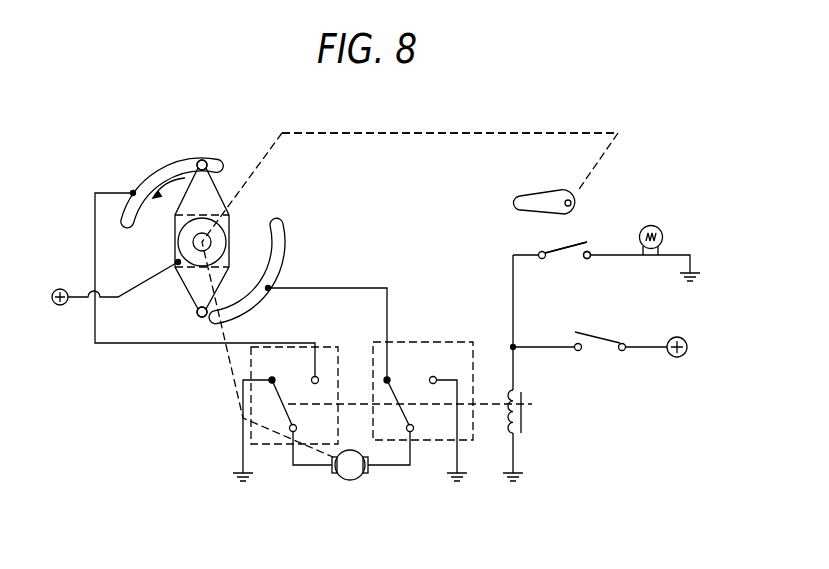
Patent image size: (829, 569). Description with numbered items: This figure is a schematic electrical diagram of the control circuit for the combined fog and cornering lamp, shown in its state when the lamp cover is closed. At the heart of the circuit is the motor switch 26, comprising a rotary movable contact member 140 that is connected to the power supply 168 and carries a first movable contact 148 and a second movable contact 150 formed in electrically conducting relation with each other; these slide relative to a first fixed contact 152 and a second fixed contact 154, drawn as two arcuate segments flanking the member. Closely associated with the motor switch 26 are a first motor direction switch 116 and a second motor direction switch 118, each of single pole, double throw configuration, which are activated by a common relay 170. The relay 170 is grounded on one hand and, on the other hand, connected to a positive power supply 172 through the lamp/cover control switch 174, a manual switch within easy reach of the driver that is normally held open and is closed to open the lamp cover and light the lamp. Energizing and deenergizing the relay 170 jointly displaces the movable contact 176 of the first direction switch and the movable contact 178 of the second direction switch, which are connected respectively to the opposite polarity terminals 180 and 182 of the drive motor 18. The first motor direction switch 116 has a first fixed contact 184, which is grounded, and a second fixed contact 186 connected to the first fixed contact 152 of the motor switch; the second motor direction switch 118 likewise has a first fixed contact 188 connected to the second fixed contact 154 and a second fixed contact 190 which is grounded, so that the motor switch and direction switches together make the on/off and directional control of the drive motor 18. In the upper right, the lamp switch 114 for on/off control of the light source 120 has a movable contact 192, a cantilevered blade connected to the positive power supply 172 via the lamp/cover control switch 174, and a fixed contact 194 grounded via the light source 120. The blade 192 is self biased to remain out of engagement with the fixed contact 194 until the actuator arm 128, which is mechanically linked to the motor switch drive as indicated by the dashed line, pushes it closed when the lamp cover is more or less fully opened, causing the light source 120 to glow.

The drive motor 18 is at (352, 480).
The motor switch 26 is at (247, 160).
The lamp switch 114 is at (590, 228).
The first motor direction switch 116 is at (277, 445).
The second motor direction switch 118 is at (427, 446).
The light source 120 is at (662, 227).
The actuator arm 128 is at (537, 192).
The movable contact member 140 is at (172, 248).
The first movable contact 148 is at (200, 158).
The second movable contact 150 is at (196, 315).
The first fixed contact 152 is at (152, 172).
The second fixed contact 154 is at (282, 245).
The power supply 168 is at (58, 307).
The relay 170 is at (525, 415).
The positive power supply 172 is at (684, 358).
The lamp/cover control switch 174 is at (602, 358).
The movable contact 176 is at (280, 394).
The movable contact 178 is at (394, 378).
The terminal 180 is at (334, 475).
The terminal 182 is at (367, 474).
The first fixed contact 184 is at (270, 380).
The second fixed contact 186 is at (318, 377).
The first fixed contact 188 is at (386, 378).
The second fixed contact 190 is at (434, 376).
The movable contact 192 is at (572, 245).
The fixed contact 194 is at (587, 259).